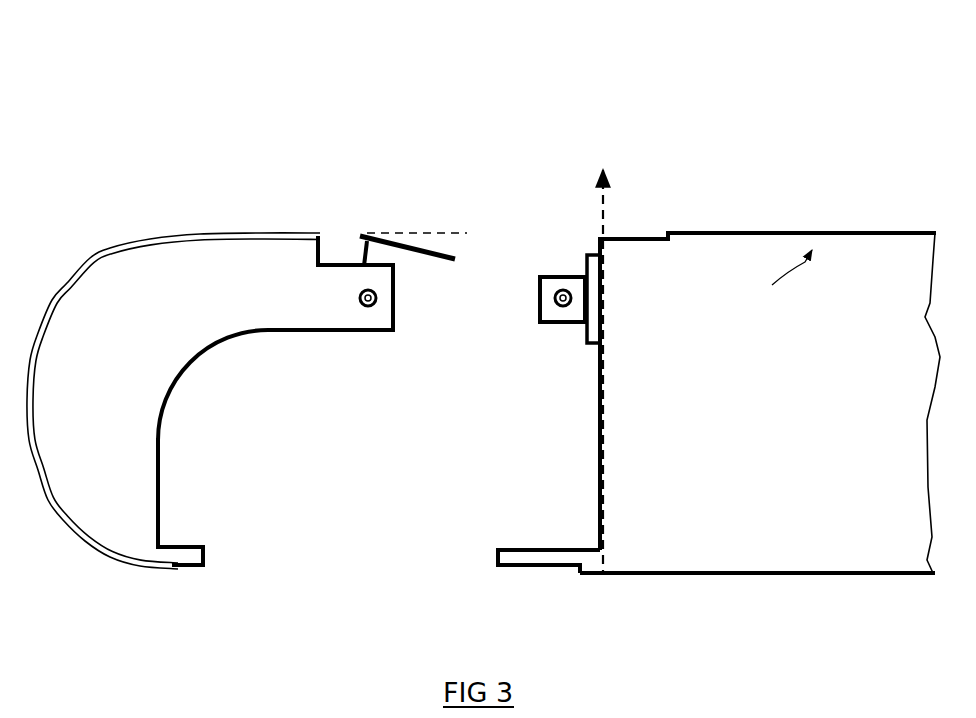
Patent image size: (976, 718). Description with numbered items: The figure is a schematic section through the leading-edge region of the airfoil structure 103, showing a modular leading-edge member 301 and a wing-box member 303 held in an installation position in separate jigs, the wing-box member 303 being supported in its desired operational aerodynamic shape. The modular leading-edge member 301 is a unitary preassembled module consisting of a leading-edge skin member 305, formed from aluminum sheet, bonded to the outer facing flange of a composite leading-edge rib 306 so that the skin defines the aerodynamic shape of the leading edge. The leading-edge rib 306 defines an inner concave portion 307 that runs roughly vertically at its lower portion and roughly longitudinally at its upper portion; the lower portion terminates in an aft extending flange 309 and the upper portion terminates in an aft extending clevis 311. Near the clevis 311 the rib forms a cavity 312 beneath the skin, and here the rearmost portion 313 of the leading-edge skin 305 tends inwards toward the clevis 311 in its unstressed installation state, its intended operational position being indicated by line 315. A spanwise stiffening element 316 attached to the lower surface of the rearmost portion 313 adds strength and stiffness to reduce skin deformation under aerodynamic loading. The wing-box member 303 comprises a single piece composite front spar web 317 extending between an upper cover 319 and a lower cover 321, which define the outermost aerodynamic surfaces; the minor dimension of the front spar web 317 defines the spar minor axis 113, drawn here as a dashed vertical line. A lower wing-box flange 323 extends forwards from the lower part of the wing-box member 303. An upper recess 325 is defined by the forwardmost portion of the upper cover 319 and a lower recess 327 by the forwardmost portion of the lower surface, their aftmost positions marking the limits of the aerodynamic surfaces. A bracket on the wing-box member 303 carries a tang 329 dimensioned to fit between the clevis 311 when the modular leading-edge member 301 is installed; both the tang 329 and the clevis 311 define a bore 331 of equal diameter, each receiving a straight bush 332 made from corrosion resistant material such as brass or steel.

The airfoil structure 103 is at (533, 130).
The second axis 113 is at (603, 450).
The modular leading-edge member 301 is at (203, 219).
The wing-box member 303 is at (757, 223).
The leading-edge skin member 305 is at (100, 262).
The leading-edge rib 306 is at (133, 347).
The inner concave portion 307 is at (170, 456).
The aft extending flange 309 is at (205, 546).
The clevis 311 is at (383, 322).
The cavity 312 is at (333, 237).
The rearmost portion 313 is at (446, 232).
The line 315 is at (402, 234).
The spanwise stiffening element 316 is at (360, 237).
The front spar web 317 is at (598, 427).
The upper cover 319 is at (713, 232).
The lower cover 321 is at (790, 575).
The lower wing-box flange 323 is at (527, 557).
The upper recess 325 is at (625, 237).
The lower recess 327 is at (537, 578).
The tang 329 is at (565, 268).
The bore 331 is at (556, 306).
The bush 332 is at (376, 297).